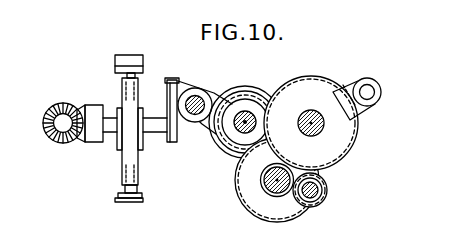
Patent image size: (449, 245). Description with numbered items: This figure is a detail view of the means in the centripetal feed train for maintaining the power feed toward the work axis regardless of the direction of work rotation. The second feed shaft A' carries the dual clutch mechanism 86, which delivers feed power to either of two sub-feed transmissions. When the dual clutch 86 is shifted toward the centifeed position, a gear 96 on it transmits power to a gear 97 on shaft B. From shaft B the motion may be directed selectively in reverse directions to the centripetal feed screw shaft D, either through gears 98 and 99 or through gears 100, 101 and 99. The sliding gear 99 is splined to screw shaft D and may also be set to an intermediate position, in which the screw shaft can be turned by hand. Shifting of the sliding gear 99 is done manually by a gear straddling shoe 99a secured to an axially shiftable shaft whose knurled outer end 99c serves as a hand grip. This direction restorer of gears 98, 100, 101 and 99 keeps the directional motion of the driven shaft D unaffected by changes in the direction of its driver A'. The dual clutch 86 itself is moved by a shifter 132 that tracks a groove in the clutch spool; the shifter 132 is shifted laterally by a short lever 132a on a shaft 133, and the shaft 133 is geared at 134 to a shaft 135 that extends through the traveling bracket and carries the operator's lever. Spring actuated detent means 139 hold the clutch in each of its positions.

The dual clutch mechanism 86 is at (237, 92).
The gear 96 is at (278, 93).
The gear 97 is at (237, 173).
The gear 98 is at (270, 172).
The sliding gear 99 is at (358, 128).
The gear straddling shoe 99a is at (353, 83).
The knurled outer end 99c is at (369, 90).
The gear 100 is at (285, 197).
The gear 101 is at (328, 197).
The shifter 132 is at (216, 90).
The short lever 132a is at (172, 143).
The shaft 133 is at (110, 138).
The gearing 134 is at (78, 143).
The shaft 135 is at (60, 128).
The spring actuated detent means 139 is at (122, 87).
The second feed shaft A' is at (255, 90).
The shaft B is at (266, 183).
The centripetal feed screw shaft D is at (322, 131).